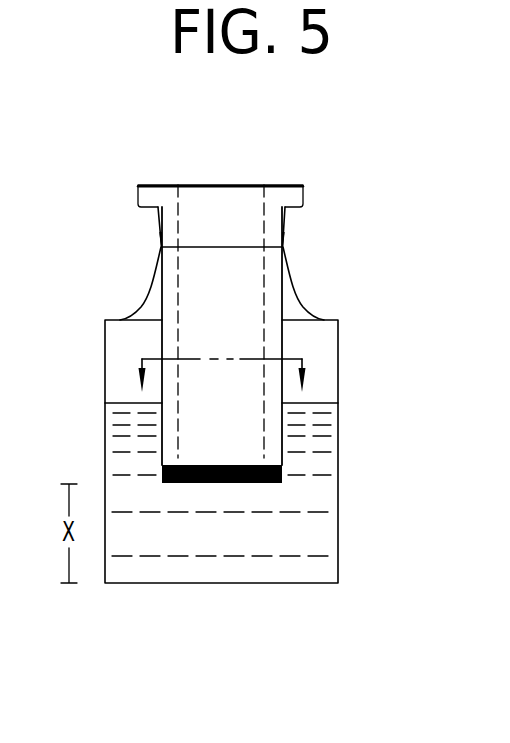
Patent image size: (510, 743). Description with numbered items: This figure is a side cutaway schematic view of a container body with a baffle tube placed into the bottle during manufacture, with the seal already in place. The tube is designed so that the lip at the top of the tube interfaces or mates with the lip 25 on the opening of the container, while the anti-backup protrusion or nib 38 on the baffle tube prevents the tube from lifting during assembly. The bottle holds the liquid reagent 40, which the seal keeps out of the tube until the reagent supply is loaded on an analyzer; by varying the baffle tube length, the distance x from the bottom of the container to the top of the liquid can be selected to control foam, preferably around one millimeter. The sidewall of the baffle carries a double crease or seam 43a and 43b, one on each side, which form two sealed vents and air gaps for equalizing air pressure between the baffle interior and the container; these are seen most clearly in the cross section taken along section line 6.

The lip on the opening of the container 25 is at (302, 210).
The anti-backup protrusion 38 is at (287, 238).
The crease or seam 43a is at (178, 293).
The crease or seam 43b is at (269, 279).
The liquid reagent 40 is at (317, 491).
The section line 6- 6 is at (221, 377).